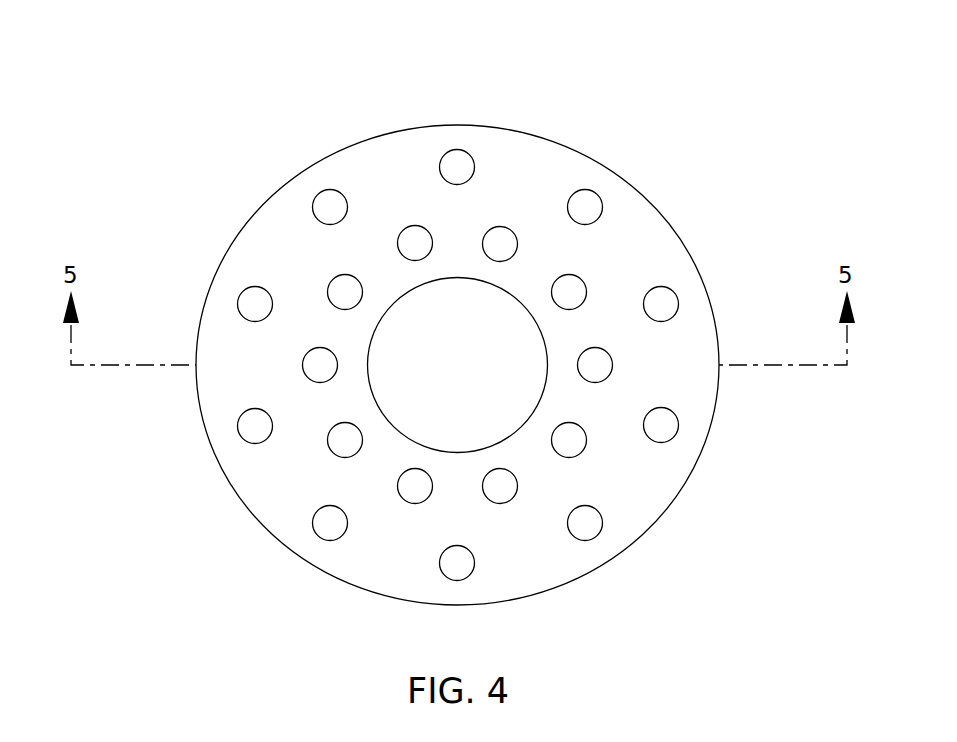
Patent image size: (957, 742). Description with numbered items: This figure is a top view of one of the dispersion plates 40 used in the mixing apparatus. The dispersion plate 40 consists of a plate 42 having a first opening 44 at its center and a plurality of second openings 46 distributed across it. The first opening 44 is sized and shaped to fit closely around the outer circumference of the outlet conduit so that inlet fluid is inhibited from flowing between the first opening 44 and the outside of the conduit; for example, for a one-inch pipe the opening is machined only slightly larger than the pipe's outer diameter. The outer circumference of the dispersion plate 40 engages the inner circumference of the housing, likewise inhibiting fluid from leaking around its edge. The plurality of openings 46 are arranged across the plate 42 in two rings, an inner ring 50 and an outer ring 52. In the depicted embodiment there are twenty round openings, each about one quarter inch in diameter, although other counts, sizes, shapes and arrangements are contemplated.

The dispersion plate 40 is at (214, 32).
The plate 42 is at (250, 203).
The first opening 44 is at (507, 312).
The plurality of second openings 46 is at (412, 240).
The inner ring 50 is at (412, 492).
The outer ring 52 is at (462, 162).